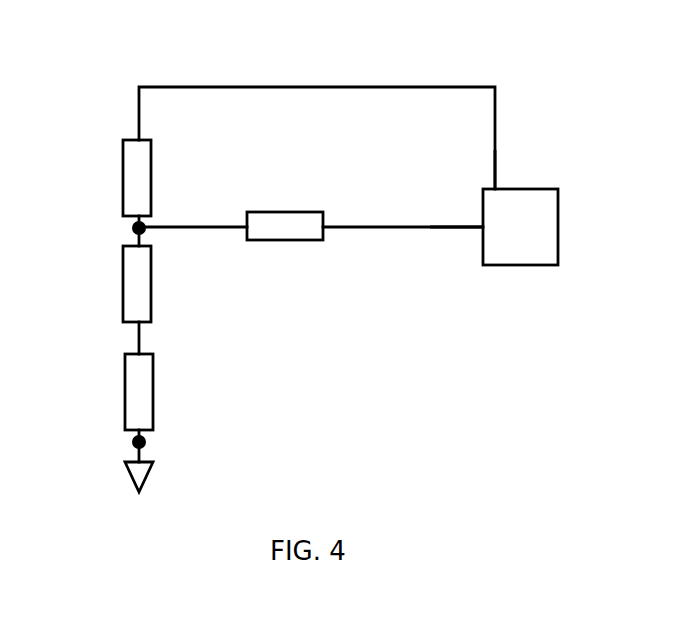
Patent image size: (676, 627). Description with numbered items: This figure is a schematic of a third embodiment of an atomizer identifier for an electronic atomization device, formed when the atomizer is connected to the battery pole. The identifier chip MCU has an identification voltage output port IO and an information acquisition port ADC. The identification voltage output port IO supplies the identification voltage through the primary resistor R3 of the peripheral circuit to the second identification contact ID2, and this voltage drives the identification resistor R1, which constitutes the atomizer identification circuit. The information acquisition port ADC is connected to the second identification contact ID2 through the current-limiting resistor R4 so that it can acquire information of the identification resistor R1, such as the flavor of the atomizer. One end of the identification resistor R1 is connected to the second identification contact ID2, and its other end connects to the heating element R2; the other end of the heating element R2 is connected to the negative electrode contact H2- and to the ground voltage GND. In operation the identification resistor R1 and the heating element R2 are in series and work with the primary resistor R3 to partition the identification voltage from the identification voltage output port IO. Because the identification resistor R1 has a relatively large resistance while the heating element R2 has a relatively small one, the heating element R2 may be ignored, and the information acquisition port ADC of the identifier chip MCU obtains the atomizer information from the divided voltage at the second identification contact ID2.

The identification resistor R1 is at (109, 284).
The heating element R2 is at (110, 392).
The primary resistor R3 is at (110, 178).
The current-limiting resistor R4 is at (285, 199).
The identifier chip MCU is at (520, 227).
The identification voltage output port IO is at (512, 169).
The information acquisition port ADC is at (452, 247).
The second identification contact ID2 is at (139, 228).
The negative electrode contact H2- is at (139, 442).
The ground voltage GND is at (104, 474).